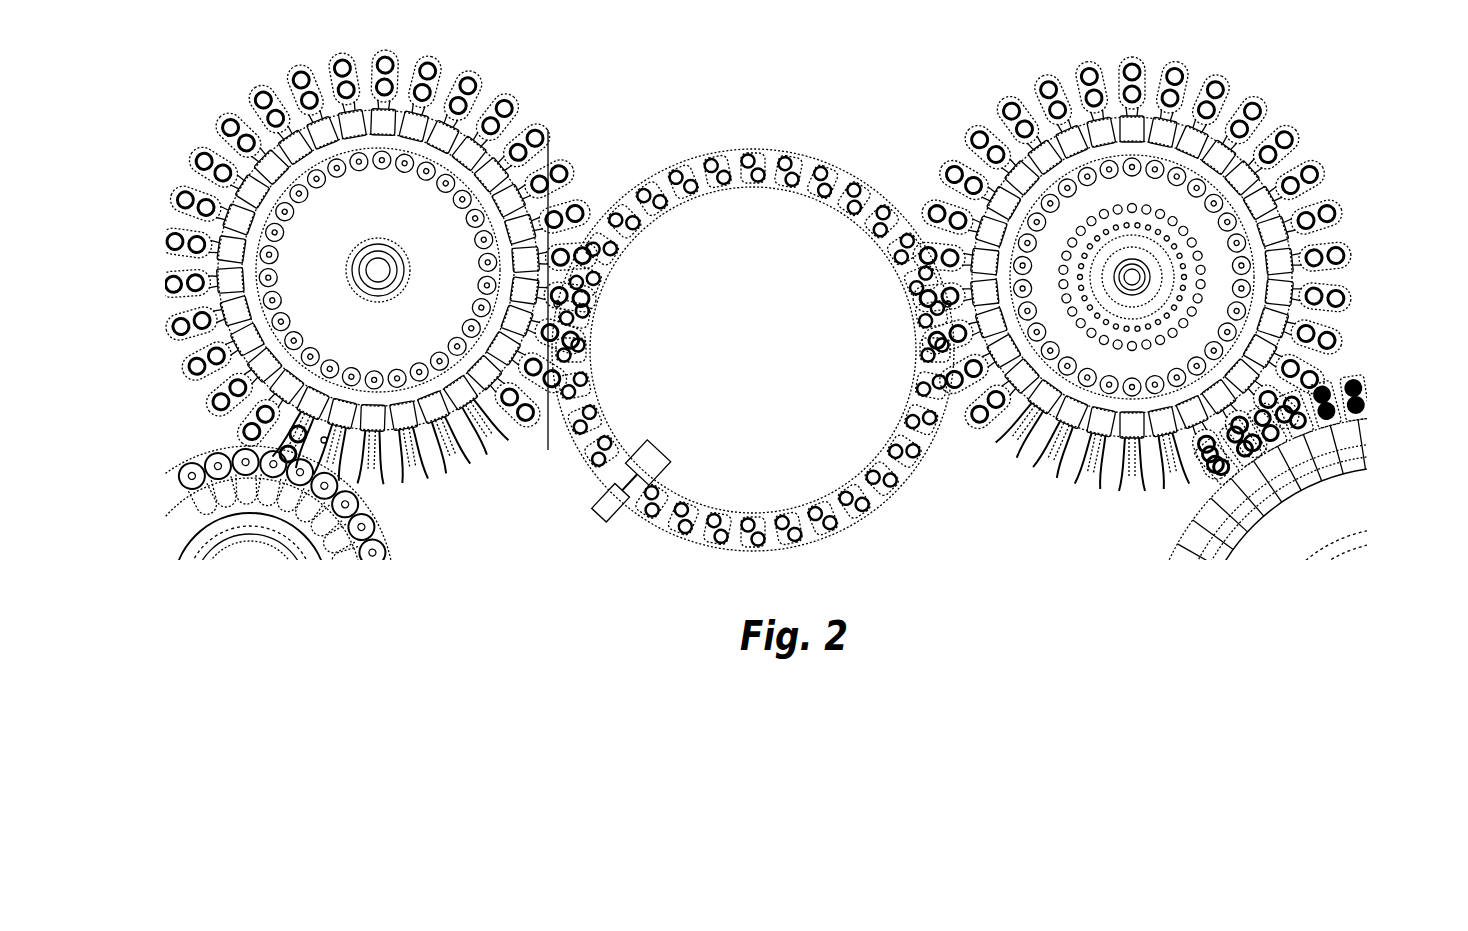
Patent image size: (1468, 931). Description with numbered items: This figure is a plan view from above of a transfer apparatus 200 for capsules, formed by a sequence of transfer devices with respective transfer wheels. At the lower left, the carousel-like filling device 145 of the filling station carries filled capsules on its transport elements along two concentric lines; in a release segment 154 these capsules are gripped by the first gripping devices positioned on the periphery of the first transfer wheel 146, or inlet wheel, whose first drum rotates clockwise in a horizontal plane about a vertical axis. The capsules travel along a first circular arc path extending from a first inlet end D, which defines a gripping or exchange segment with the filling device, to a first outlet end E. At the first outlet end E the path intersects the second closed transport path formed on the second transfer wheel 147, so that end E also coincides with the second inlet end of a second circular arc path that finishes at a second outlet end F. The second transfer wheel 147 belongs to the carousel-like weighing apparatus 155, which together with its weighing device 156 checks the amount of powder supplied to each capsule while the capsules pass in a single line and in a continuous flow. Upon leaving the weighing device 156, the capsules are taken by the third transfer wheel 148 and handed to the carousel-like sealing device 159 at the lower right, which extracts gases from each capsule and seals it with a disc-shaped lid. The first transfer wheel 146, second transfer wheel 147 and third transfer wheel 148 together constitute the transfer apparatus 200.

The first transfer wheel 146 is at (183, 147).
The third transfer wheel 148 is at (1357, 172).
The carousel-like filling device 145 is at (250, 577).
The second transfer wheel 147 is at (657, 560).
The release segment 154 is at (290, 456).
The carousel-like weighing apparatus 155 is at (776, 367).
The weighing device 156 is at (620, 507).
The sealing device 159 is at (1395, 445).
The transfer apparatus 200 is at (1045, 605).
The first inlet end D is at (322, 438).
The first outlet end E is at (557, 302).
The second outlet end F is at (948, 302).